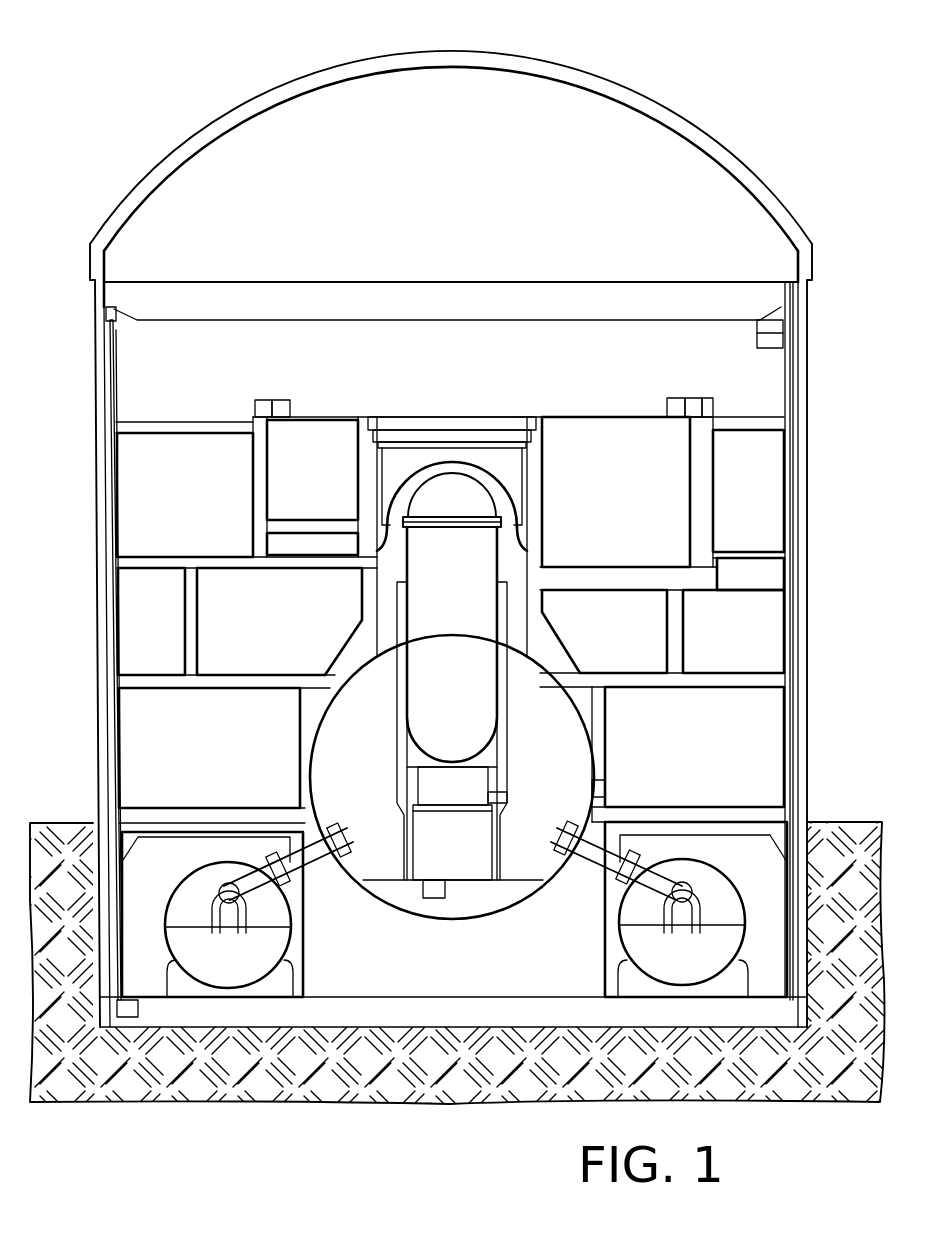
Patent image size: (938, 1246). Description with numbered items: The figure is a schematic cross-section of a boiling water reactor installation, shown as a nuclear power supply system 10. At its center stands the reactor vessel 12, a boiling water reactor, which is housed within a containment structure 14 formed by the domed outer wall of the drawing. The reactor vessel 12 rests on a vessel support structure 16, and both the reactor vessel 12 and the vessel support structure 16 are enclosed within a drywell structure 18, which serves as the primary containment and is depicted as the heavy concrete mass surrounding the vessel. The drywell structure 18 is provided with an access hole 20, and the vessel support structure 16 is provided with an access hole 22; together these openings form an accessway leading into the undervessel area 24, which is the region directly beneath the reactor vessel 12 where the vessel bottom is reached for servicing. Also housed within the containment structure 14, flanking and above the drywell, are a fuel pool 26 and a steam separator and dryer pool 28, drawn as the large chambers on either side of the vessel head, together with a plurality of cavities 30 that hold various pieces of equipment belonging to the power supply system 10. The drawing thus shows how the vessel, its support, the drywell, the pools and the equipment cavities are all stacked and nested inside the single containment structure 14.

The nuclear power supply system 10 is at (157, 84).
The reactor vessel 12 is at (463, 474).
The containment structure 14 is at (97, 430).
The vessel support structure 16 is at (400, 847).
The drywell structure 18 is at (338, 648).
The access hole 20 is at (606, 797).
The access hole 22 is at (500, 799).
The undervessel area 24 is at (452, 857).
The fuel pool 26 is at (543, 505).
The steam separator and dryer pool 28 is at (310, 457).
The cavities 30 is at (175, 453).